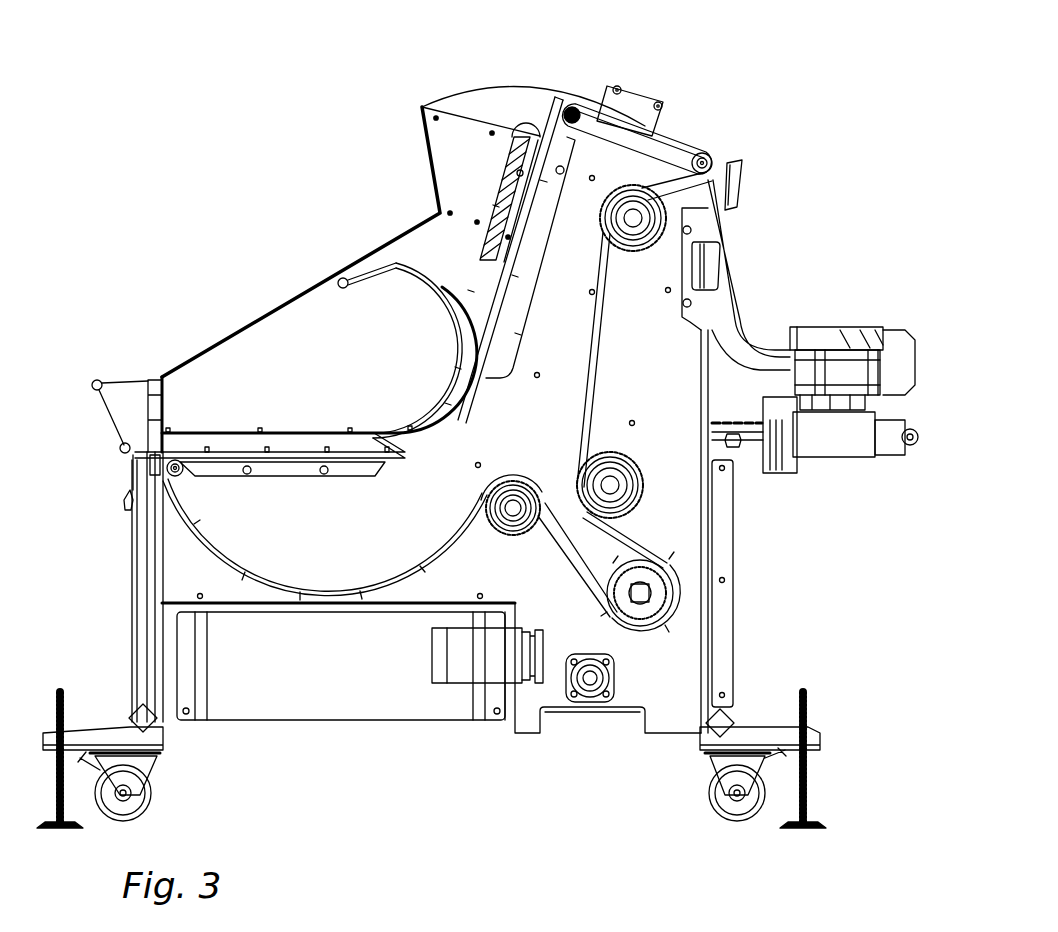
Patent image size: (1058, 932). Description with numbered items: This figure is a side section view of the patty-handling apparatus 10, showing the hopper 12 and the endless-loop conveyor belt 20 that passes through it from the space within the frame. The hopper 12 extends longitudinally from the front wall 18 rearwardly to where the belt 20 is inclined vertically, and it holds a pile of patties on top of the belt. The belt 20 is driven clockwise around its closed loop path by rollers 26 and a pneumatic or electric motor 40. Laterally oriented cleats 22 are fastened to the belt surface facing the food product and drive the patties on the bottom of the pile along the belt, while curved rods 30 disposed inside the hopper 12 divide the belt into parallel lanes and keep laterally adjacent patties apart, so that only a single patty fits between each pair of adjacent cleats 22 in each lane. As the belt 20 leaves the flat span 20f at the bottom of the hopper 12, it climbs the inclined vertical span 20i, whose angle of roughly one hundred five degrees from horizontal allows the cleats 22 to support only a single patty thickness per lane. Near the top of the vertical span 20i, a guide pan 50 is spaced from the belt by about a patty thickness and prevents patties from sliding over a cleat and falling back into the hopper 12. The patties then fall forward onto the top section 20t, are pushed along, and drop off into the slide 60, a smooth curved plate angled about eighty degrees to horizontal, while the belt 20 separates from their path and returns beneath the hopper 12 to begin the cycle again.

The apparatus 10 is at (776, 71).
The hopper 12 is at (265, 355).
The front wall 18 is at (163, 382).
The conveyor belt 20 is at (503, 303).
The vertical span 20i is at (518, 247).
The top section 20t is at (637, 103).
The flat span 20f is at (220, 470).
The cleats 22 is at (243, 575).
The rollers 26 is at (733, 207).
The curved rods 30 is at (368, 277).
The motor 40 is at (847, 452).
The guide pan 50 is at (520, 89).
The slide 60 is at (730, 267).